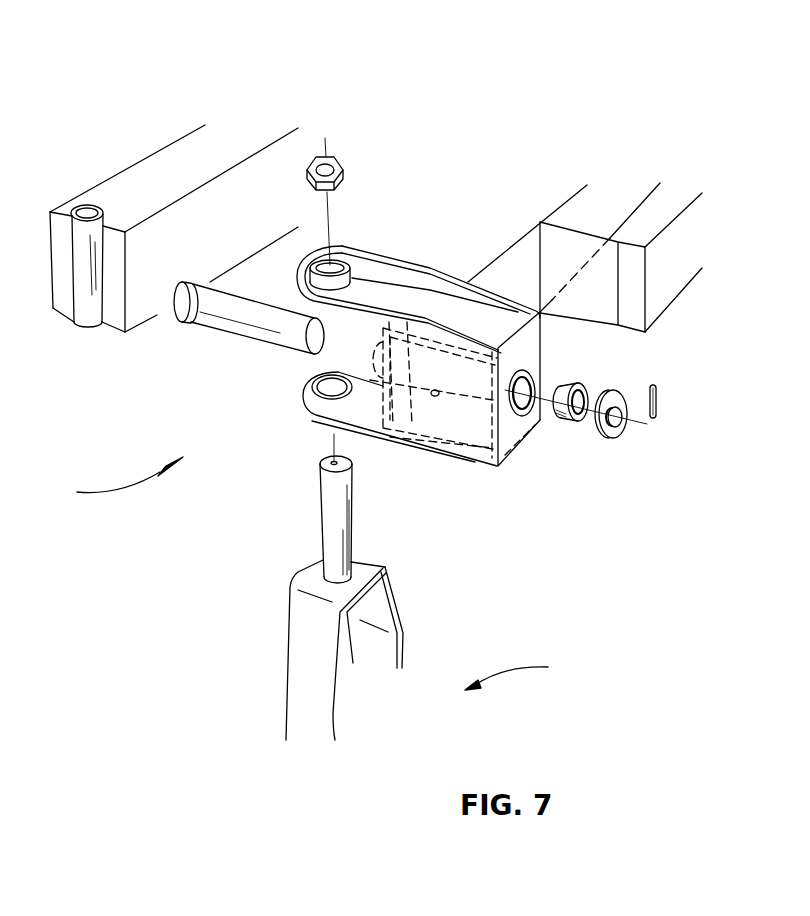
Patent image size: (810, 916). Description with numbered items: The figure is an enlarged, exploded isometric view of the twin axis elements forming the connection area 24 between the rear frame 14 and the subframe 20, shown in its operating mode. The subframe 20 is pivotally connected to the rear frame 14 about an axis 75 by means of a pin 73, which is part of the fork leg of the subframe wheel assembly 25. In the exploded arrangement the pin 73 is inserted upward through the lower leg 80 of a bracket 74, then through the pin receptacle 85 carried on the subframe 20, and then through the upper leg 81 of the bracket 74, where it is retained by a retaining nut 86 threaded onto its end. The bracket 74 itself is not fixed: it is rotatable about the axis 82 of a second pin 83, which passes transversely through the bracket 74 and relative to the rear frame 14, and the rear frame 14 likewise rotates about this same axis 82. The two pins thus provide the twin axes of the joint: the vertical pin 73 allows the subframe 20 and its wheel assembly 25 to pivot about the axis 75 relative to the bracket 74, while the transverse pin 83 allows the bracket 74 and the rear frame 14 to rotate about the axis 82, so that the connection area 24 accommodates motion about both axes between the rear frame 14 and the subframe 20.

The rear frame 14 is at (523, 230).
The subframe 20 is at (135, 160).
The connection area 24 is at (118, 475).
The subframe wheel assembly 25 is at (436, 650).
The pin 73 is at (357, 515).
The bracket 74 is at (545, 352).
The axis 75 is at (335, 435).
The lower leg 80 is at (318, 407).
The upper leg 81 is at (345, 245).
The axis 82 is at (358, 345).
The pin 83 is at (222, 315).
The pin receptacle 85 is at (90, 303).
The retaining nut 86 is at (345, 153).